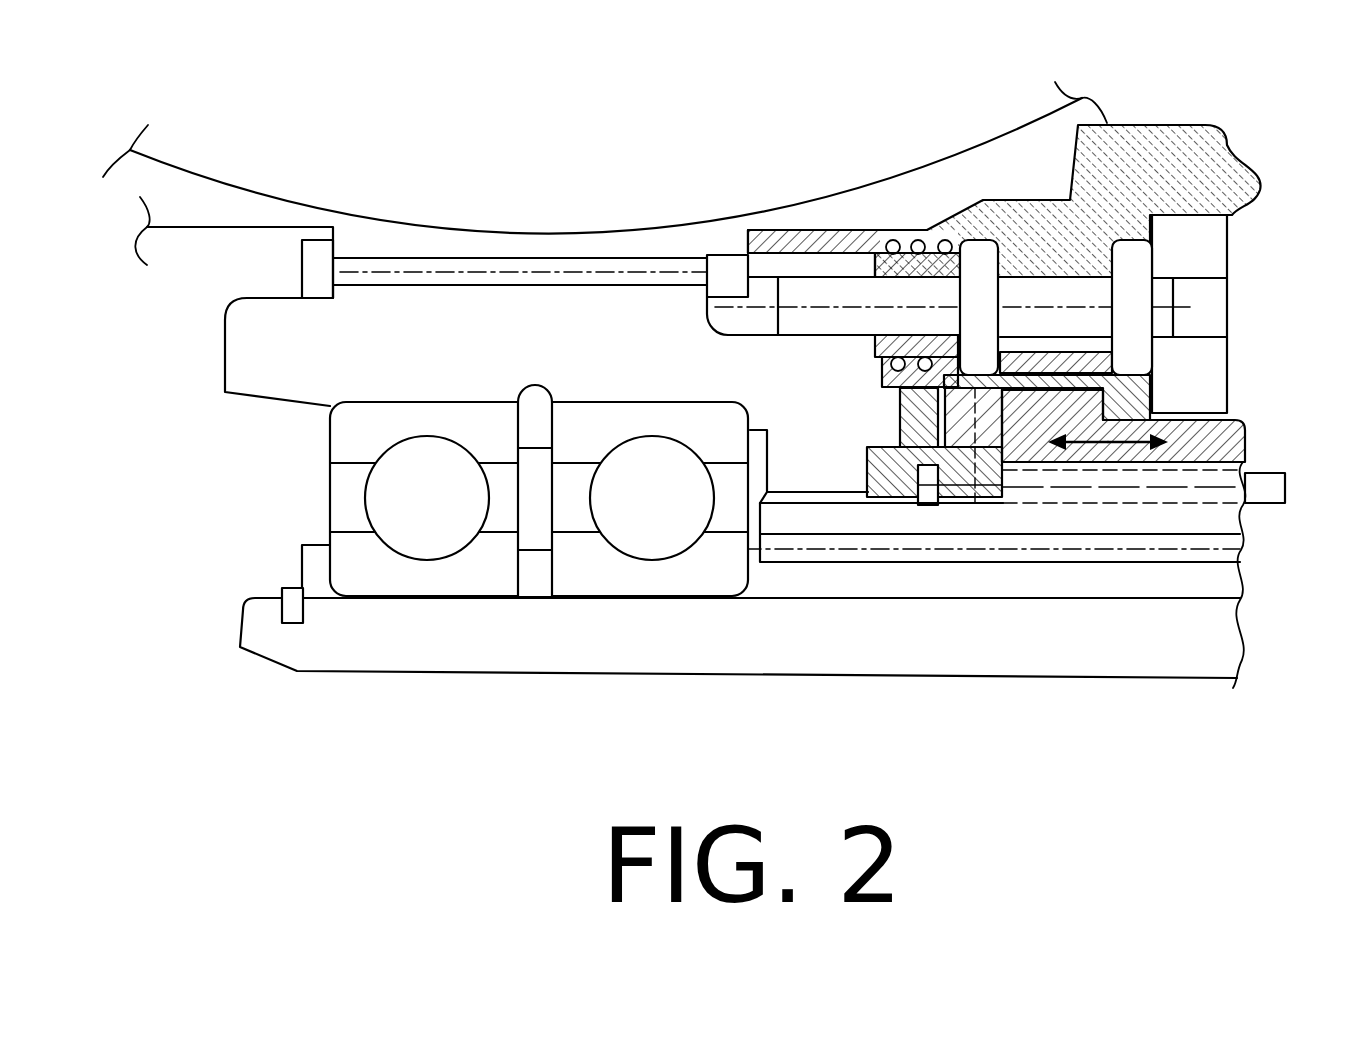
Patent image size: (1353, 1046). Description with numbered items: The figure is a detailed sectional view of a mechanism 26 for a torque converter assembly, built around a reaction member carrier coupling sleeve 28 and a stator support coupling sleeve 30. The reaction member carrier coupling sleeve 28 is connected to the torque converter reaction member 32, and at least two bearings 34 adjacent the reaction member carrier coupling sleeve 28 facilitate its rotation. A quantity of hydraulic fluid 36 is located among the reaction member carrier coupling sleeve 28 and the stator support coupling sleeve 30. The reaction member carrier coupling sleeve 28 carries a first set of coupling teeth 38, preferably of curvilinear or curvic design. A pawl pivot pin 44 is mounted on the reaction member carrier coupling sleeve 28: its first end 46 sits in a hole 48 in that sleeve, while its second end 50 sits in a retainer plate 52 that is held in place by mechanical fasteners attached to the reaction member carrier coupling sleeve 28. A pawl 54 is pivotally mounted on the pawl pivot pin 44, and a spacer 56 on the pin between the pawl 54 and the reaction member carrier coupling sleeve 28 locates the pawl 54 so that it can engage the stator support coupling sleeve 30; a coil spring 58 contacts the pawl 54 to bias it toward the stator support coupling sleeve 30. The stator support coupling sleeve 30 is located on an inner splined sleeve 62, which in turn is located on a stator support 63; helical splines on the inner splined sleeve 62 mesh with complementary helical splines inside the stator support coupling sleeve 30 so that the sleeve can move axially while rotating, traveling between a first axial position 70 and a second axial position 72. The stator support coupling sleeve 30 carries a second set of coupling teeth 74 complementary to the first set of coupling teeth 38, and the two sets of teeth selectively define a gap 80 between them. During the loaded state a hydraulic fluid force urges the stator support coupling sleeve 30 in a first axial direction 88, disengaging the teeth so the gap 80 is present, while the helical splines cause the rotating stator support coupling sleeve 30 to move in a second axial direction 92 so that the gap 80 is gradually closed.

The mechanism 26 is at (680, 313).
The reaction member carrier coupling sleeve 28 is at (303, 380).
The stator support coupling sleeve 30 is at (1245, 428).
The torque converter reaction member 32 is at (556, 152).
The bearings 34 is at (462, 573).
The hydraulic fluid 36 is at (1165, 160).
The first set of coupling teeth 38 is at (900, 418).
The pawl pivot pin 44 is at (790, 322).
The first end 46 is at (766, 252).
The hole 48 is at (807, 337).
The second end 50 is at (1212, 306).
The retainer plate 52 is at (1200, 252).
The pawl 54 is at (1093, 363).
The spacer 56 is at (893, 262).
The coil spring 58 is at (893, 372).
The inner splined sleeve 62 is at (1228, 522).
The stator support 63 is at (615, 655).
The first axial position 70 is at (1030, 437).
The second axial position 72 is at (922, 422).
The second set of coupling teeth 74 is at (965, 435).
The gap 80 is at (941, 392).
The first axial direction 88 is at (1162, 443).
The second axial direction 92 is at (1067, 442).